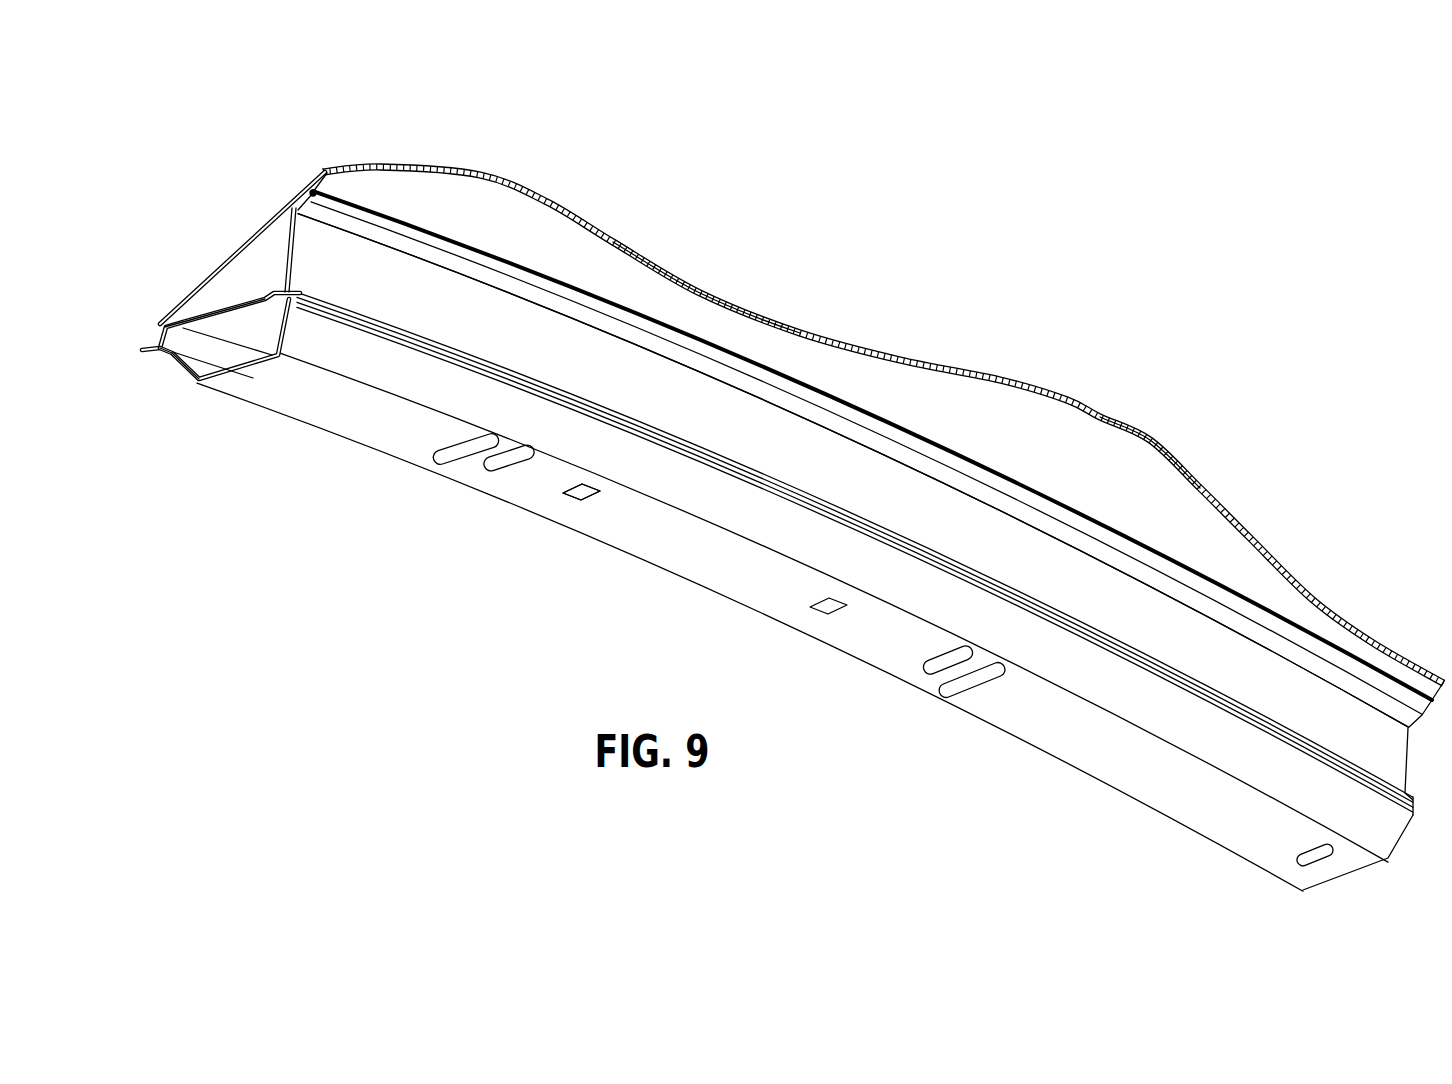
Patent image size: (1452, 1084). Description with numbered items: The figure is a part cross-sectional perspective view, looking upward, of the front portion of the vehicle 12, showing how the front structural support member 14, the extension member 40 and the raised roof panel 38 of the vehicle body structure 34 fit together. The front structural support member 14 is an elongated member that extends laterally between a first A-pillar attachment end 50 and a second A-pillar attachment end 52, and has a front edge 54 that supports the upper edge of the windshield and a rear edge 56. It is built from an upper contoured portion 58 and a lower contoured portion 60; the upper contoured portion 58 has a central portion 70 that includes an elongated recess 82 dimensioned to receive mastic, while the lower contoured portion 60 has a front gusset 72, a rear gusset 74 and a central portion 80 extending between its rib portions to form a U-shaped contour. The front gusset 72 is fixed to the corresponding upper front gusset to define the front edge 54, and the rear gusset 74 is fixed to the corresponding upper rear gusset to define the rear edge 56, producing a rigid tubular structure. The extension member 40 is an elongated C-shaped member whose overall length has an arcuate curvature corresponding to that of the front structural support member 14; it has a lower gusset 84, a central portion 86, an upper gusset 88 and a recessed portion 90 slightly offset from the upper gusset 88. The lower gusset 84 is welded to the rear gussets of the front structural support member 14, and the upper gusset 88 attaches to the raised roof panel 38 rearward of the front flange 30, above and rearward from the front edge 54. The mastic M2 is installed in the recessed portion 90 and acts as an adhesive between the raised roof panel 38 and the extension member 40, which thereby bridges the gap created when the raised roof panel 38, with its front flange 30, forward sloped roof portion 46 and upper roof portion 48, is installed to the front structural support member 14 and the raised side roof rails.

The vehicle 12 is at (1108, 318).
The front structural support member 14 is at (658, 583).
The front flange 30 is at (150, 350).
The vehicle body structure 34 is at (562, 170).
The raised roof panel 38 is at (650, 293).
The extension member 40 is at (920, 508).
The forward sloped roof portion 46 is at (278, 213).
The upper roof portion 48 is at (1133, 468).
The first A-pillar attachment end 50 is at (247, 368).
The second A-pillar attachment end 52 is at (1345, 880).
The front edge 54 is at (165, 357).
The rear edge 56 is at (517, 377).
The upper contoured portion 58 is at (197, 313).
The lower contoured portion 60 is at (400, 465).
The central portion 70 is at (228, 307).
The front gusset 72 is at (172, 360).
The rear gusset 74 is at (370, 330).
The central portion 80 is at (292, 390).
The recess 82 is at (255, 293).
The lower gusset 84 is at (300, 293).
The central portion 86 is at (478, 312).
The upper gusset 88 is at (412, 248).
The recessed portion 90 is at (358, 215).
The mastic M2 is at (313, 190).